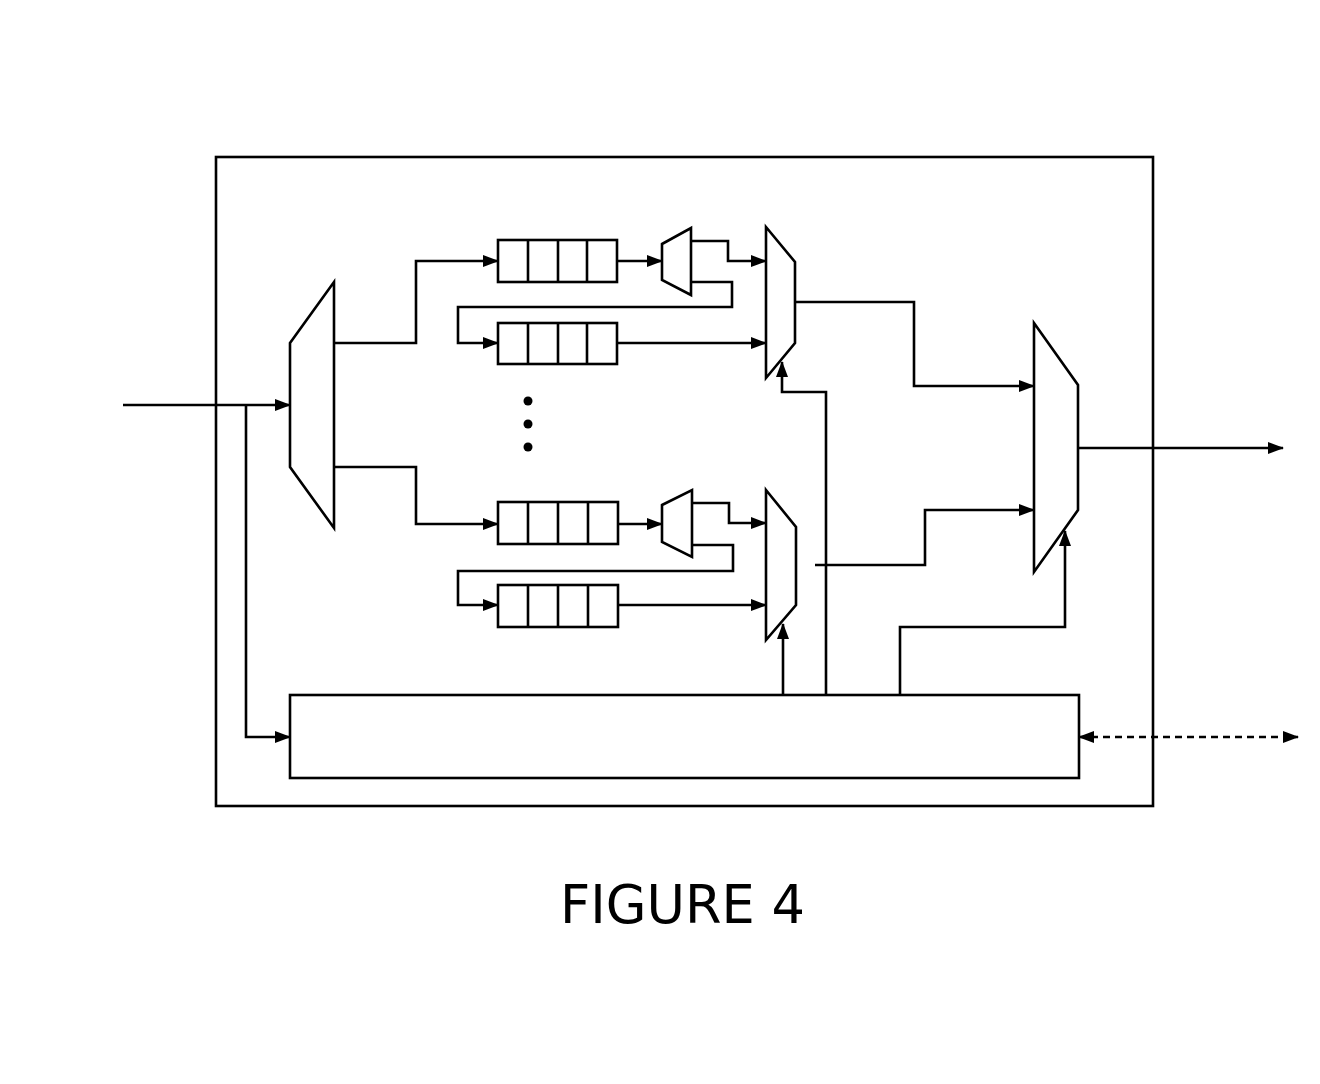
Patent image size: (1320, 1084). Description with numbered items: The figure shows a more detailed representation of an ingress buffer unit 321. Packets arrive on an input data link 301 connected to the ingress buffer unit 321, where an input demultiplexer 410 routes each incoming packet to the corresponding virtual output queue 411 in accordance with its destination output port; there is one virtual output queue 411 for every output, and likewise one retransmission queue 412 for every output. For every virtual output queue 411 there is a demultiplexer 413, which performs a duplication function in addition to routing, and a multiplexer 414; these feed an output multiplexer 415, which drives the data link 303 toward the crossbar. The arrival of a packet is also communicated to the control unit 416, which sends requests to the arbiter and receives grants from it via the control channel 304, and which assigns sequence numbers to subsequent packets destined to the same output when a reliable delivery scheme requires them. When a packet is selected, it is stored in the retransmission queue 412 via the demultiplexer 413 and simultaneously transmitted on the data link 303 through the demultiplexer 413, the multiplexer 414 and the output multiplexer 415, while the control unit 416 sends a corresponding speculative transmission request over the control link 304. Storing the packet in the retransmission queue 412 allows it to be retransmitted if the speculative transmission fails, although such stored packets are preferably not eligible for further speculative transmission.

The input data link 301 is at (185, 405).
The data link 303 is at (1197, 448).
The control channel 304 is at (1200, 737).
The ingress buffer unit 321 is at (618, 156).
The input demultiplexer 410 is at (320, 296).
The virtual output queue 411 is at (545, 240).
The retransmission queue 412 is at (543, 365).
The demultiplexer 413 is at (680, 236).
The multiplexer 414 is at (782, 240).
The output multiplexer 415 is at (1048, 340).
The control unit 416 is at (847, 753).